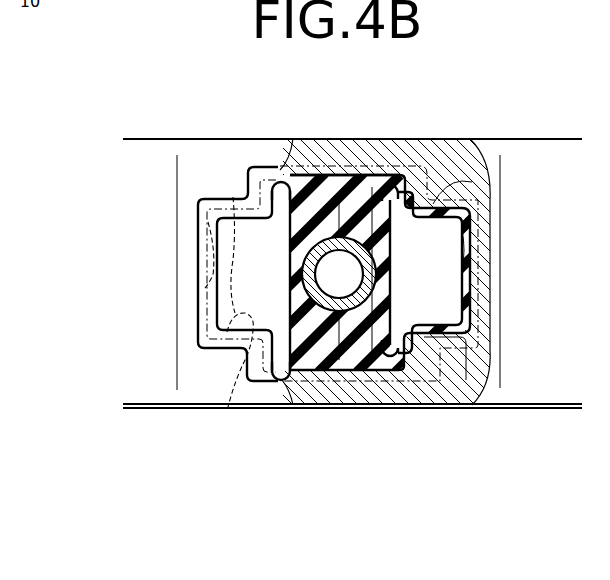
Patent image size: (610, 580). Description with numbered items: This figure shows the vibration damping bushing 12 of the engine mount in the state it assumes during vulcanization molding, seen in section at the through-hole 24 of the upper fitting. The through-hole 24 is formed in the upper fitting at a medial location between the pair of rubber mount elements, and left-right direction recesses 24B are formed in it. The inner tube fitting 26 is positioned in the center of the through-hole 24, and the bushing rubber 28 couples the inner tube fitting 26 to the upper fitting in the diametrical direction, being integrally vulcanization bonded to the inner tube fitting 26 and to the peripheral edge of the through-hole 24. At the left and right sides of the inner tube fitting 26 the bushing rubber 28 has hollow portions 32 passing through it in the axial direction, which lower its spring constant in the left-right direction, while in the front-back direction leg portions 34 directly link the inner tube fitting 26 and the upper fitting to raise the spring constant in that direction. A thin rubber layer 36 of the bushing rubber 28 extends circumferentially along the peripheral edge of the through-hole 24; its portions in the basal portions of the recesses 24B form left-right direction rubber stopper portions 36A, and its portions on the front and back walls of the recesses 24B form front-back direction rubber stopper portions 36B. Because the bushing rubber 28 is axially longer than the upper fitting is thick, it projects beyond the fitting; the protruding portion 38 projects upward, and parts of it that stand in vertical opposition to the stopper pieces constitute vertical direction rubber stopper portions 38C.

The vibration damping bushing 12 is at (450, 157).
The through-hole 24 is at (228, 407).
The left-right direction recesses 24B is at (207, 281).
The inner tube fitting 26 is at (365, 268).
The bushing rubber 28 is at (396, 170).
The hollow portions 32 is at (279, 381).
The leg portions 34 is at (336, 195).
The rubber layer 36 is at (212, 238).
The left-right direction rubber stopper portions 36A is at (230, 334).
The front-back direction rubber stopper portions 36B is at (233, 197).
The protruding portion 38 is at (301, 183).
The vertical direction rubber stopper portions 38C is at (372, 187).